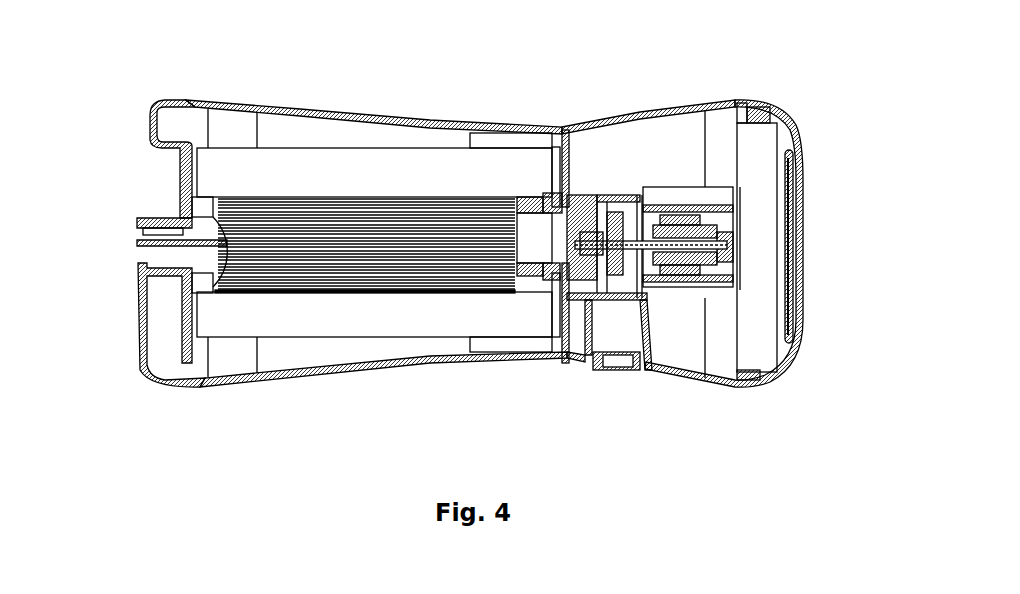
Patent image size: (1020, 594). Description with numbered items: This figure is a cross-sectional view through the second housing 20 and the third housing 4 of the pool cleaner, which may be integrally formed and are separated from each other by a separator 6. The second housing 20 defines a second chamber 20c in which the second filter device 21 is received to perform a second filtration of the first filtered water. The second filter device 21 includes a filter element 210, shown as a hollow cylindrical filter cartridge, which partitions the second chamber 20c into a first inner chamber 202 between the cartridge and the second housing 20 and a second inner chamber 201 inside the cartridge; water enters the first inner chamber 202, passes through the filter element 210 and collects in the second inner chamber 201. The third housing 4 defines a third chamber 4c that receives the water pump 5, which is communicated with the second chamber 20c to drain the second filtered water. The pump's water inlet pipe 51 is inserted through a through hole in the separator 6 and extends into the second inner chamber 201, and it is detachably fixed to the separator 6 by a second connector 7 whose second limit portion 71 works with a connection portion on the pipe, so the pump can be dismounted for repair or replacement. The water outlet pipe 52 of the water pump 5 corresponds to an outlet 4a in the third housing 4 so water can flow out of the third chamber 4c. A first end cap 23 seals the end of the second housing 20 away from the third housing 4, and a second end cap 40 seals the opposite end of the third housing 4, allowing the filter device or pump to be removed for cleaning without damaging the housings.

The second housing 20 is at (203, 389).
The second chamber 20c is at (283, 382).
The first inner chamber 202 is at (283, 124).
The first end cap 23 is at (185, 157).
The second inner chamber 201 is at (221, 263).
The second filter device 21 is at (396, 312).
The filter element 210 is at (333, 312).
The second connector 7 is at (517, 198).
The second limit portion 71 is at (530, 198).
The water inlet pipe 51 is at (543, 198).
The separator 6 is at (565, 128).
The third housing 4 is at (612, 122).
The third chamber 4c is at (650, 132).
The second end cap 40 is at (797, 200).
The water pump 5 is at (688, 262).
The outlet 4a is at (626, 367).
The water outlet pipe 52 is at (640, 306).